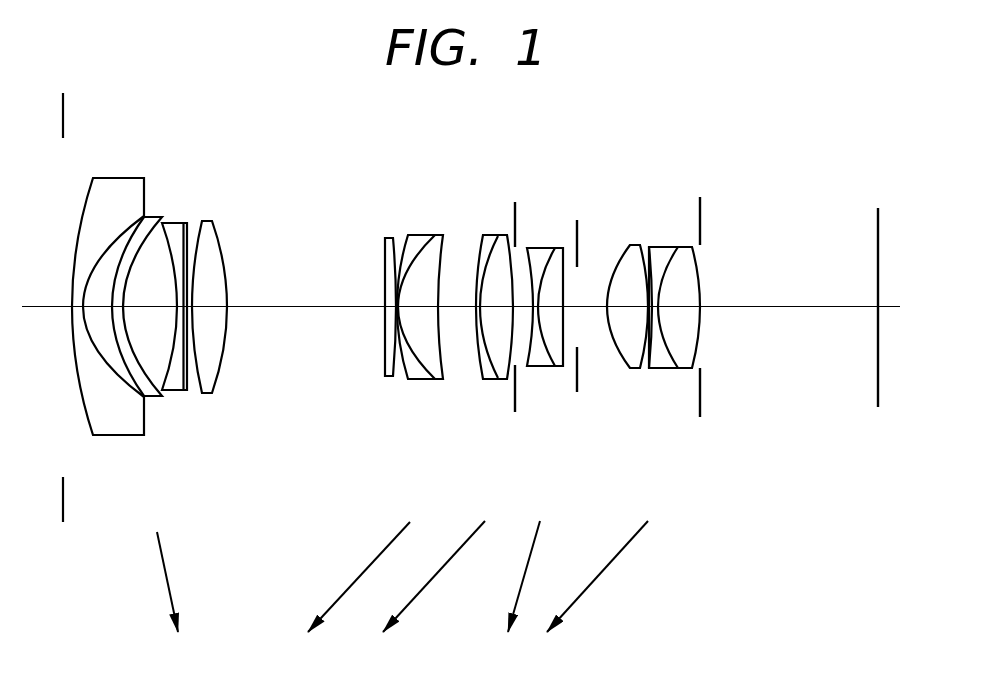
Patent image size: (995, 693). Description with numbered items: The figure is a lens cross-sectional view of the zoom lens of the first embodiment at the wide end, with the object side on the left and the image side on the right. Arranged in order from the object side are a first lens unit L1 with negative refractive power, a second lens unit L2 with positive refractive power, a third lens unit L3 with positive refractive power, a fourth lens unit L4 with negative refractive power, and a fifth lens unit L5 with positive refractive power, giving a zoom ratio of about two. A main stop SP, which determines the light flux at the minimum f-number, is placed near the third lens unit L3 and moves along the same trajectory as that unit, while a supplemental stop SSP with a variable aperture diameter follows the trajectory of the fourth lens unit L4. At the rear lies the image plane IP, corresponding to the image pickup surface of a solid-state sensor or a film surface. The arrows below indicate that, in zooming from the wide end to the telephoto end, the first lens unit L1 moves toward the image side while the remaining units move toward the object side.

The first lens unit L1 is at (233, 472).
The second lens unit L2 is at (376, 434).
The third lens unit L3 is at (512, 434).
The fourth lens unit L4 is at (568, 434).
The fifth lens unit L5 is at (600, 434).
The main stop SP is at (513, 210).
The supplemental stop SSP is at (580, 227).
The image plane IP is at (876, 219).